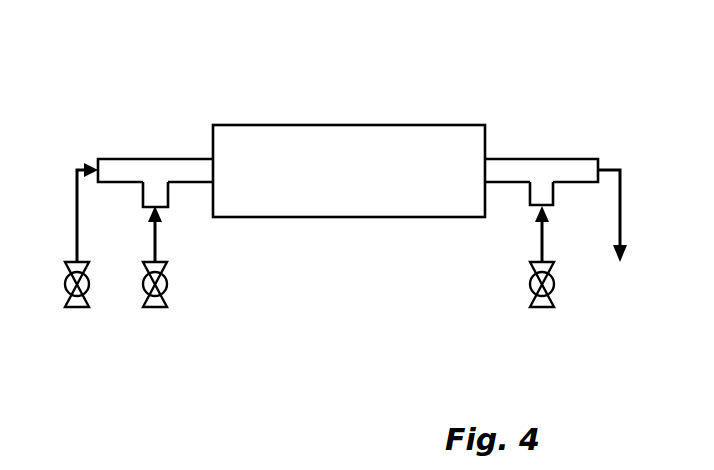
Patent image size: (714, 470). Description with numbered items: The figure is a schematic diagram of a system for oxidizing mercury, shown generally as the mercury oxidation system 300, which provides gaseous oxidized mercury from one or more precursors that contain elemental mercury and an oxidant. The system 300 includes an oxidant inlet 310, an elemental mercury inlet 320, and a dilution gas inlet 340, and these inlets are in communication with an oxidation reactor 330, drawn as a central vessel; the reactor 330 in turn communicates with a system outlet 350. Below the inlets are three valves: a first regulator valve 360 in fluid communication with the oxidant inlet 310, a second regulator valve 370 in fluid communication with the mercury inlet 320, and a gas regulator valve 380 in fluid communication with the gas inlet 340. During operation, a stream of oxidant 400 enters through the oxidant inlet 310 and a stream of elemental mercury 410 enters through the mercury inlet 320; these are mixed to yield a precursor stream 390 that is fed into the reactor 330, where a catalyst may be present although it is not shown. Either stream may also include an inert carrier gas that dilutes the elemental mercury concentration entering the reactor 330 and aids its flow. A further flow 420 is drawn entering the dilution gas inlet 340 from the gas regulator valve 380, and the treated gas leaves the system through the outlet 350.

The mercury oxidation system 300 is at (322, 90).
The oxidant inlet 310 is at (110, 152).
The elemental mercury inlet 320 is at (140, 195).
The oxidation reactor 330 is at (349, 171).
The dilution gas inlet 340 is at (558, 192).
The system outlet 350 is at (598, 152).
The first regulator valve 360 is at (77, 302).
The second regulator valve 370 is at (160, 302).
The gas regulator valve 380 is at (540, 302).
The precursor stream 390 is at (190, 152).
The stream of oxidant 400 is at (519, 146).
The stream of elemental mercury 410 is at (174, 234).
The outlet flow 420 is at (523, 234).